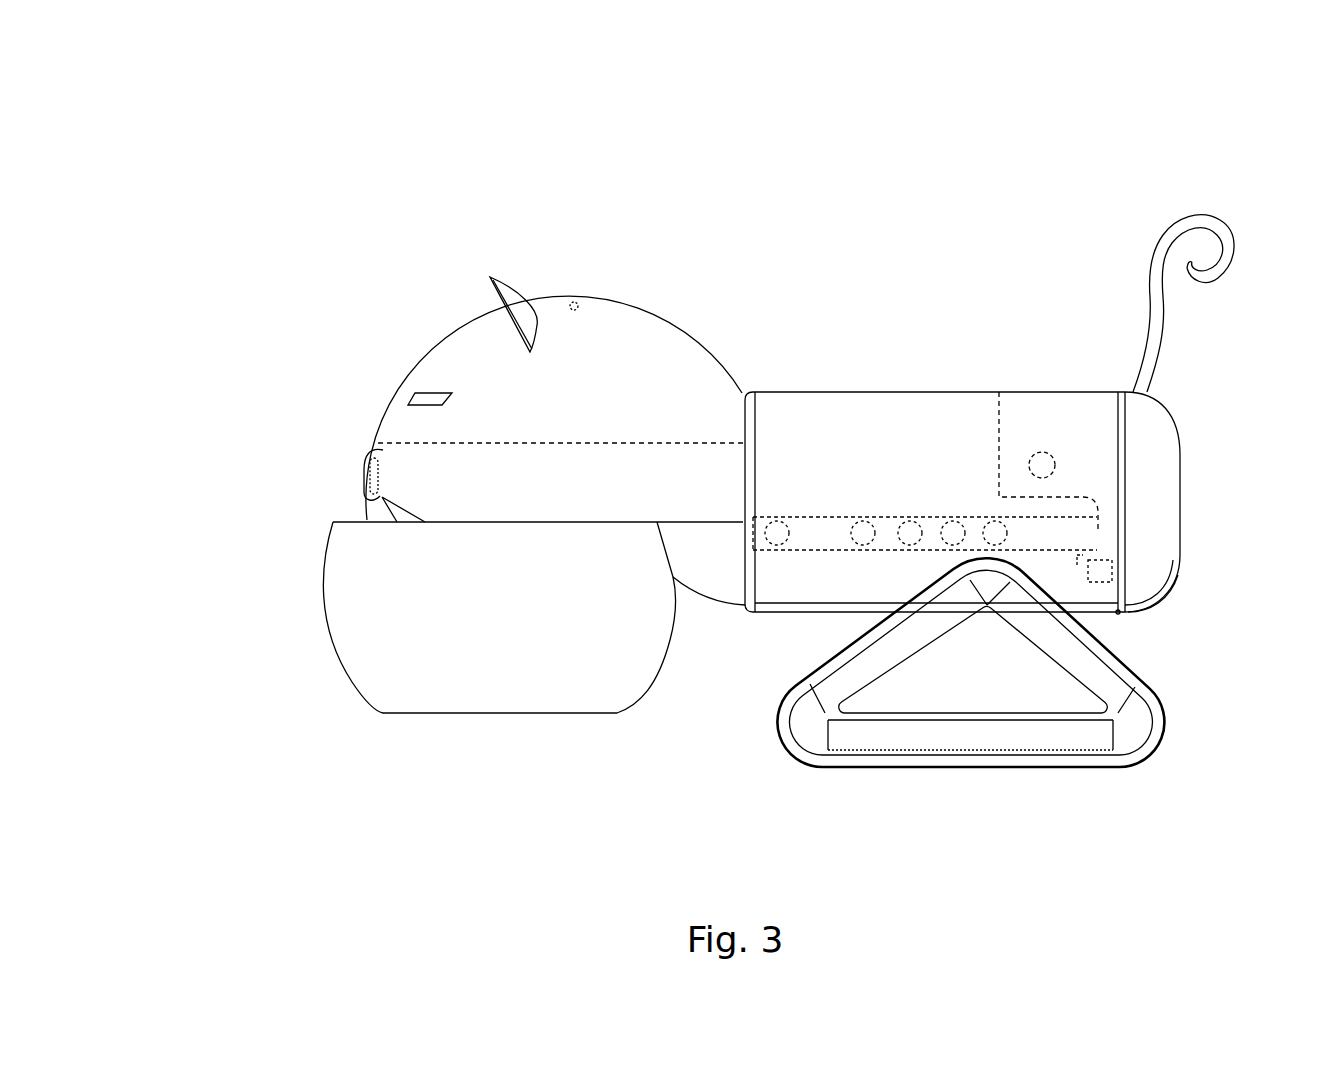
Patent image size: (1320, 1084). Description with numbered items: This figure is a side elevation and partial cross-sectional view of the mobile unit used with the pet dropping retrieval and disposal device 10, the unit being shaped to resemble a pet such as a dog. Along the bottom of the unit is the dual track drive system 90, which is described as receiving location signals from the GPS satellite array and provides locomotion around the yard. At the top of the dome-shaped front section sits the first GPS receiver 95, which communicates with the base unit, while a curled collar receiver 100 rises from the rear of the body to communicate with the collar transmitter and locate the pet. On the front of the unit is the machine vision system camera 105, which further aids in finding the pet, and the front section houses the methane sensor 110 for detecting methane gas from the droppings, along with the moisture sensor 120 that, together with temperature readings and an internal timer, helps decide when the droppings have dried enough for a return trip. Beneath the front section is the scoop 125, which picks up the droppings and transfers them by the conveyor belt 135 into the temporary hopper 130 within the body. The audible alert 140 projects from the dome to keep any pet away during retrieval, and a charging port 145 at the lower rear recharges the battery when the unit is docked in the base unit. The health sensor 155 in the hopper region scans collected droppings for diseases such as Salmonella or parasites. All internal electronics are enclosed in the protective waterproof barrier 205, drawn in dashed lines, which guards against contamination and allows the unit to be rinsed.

The pet dropping retrieval and disposal device 10 is at (178, 200).
The dual track drive system 90 is at (980, 740).
The first GPS receiver 95 is at (575, 302).
The collar receiver 100 is at (1203, 220).
The machine vision system camera 105 is at (373, 463).
The methane sensor 110 is at (458, 353).
The moisture sensor 120 is at (425, 400).
The scoop 125 is at (391, 663).
The temporary hopper 130 is at (905, 420).
The conveyor belt 135 is at (1055, 537).
The audible alert 140 is at (505, 290).
The charging port 145 is at (1147, 603).
The health sensor 155 is at (1048, 458).
The protective waterproof barrier 205 is at (400, 443).